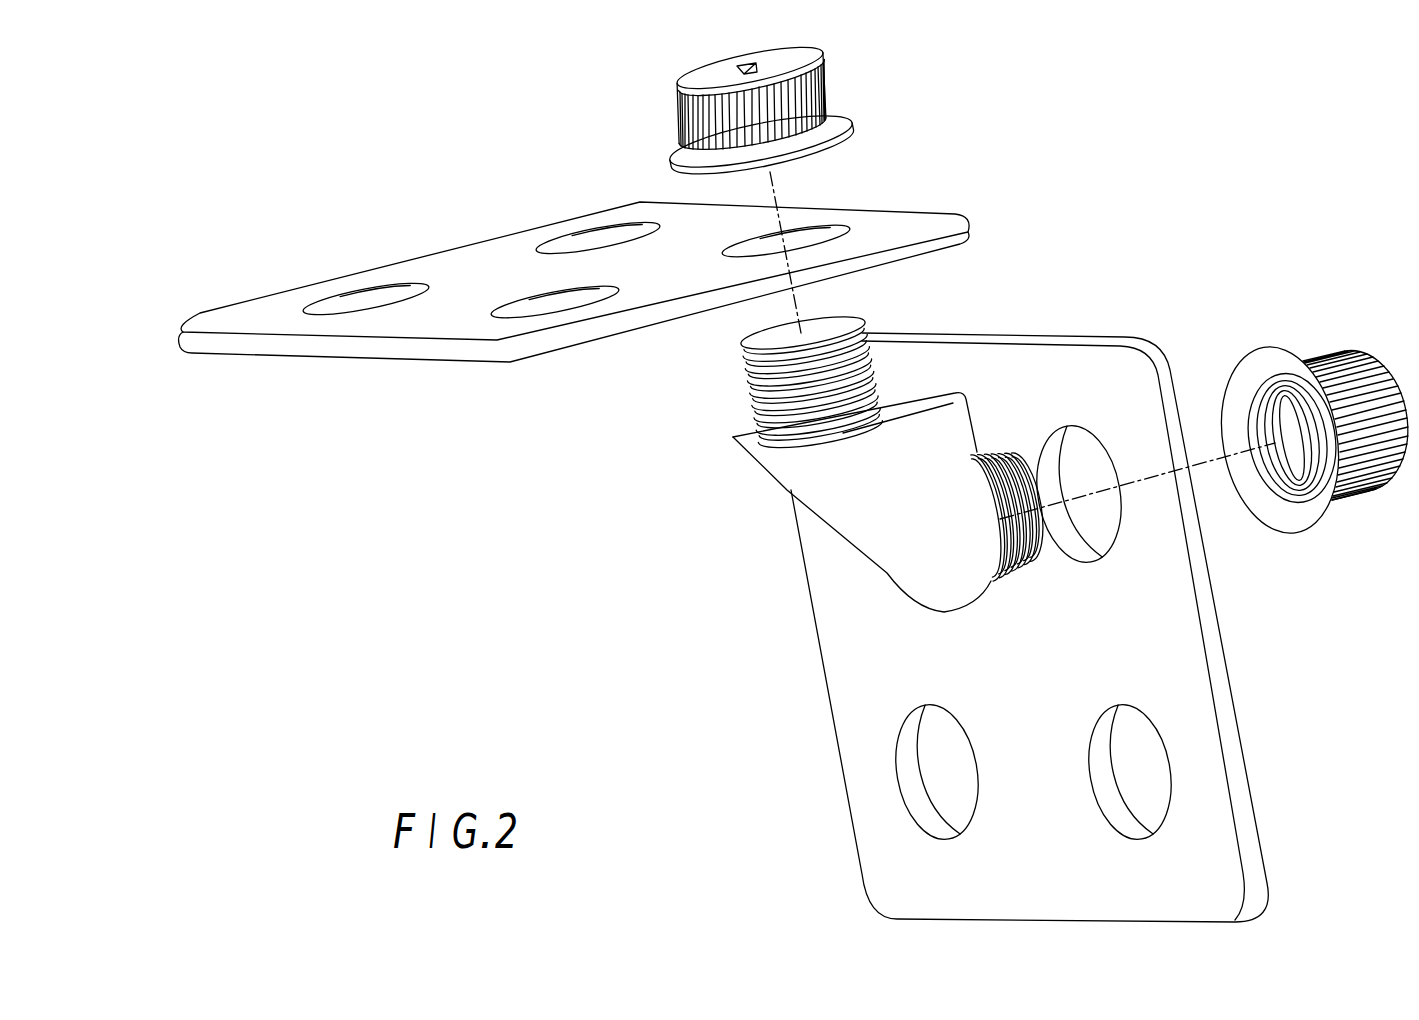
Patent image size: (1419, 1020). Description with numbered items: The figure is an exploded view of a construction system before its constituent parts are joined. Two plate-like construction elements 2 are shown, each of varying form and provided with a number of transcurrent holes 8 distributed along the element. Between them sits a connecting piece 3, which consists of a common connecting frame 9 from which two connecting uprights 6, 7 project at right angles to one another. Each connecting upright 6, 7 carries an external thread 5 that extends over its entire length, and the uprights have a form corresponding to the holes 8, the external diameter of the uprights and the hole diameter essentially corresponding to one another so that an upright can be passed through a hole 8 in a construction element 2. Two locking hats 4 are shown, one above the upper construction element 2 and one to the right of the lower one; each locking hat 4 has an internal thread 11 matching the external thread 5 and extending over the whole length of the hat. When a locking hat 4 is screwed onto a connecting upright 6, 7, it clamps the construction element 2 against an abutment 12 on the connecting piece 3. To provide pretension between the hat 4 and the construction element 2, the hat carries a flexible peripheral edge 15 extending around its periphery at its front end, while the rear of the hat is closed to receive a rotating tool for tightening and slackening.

The construction element 2 is at (942, 223).
The connecting piece 3 is at (785, 495).
The locking hat 4 is at (830, 103).
The external thread 5 is at (873, 385).
The connecting upright 6 is at (998, 468).
The connecting upright 7 is at (870, 340).
The transcurrent hole 8 is at (1110, 450).
The connecting frame 9 is at (838, 503).
The internal thread 11 is at (1326, 476).
The abutment 12 is at (915, 398).
The flexible peripheral edge 15 is at (1293, 517).